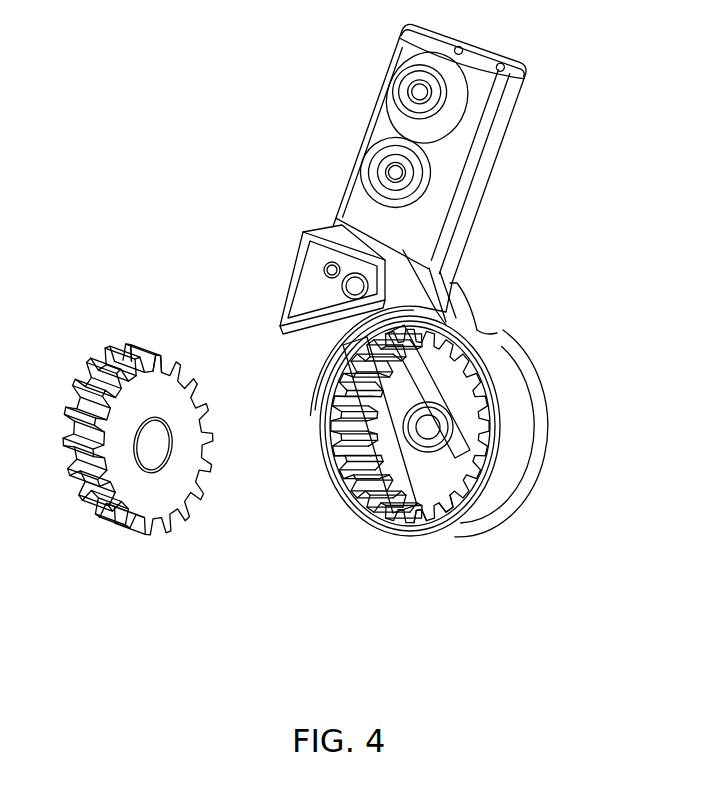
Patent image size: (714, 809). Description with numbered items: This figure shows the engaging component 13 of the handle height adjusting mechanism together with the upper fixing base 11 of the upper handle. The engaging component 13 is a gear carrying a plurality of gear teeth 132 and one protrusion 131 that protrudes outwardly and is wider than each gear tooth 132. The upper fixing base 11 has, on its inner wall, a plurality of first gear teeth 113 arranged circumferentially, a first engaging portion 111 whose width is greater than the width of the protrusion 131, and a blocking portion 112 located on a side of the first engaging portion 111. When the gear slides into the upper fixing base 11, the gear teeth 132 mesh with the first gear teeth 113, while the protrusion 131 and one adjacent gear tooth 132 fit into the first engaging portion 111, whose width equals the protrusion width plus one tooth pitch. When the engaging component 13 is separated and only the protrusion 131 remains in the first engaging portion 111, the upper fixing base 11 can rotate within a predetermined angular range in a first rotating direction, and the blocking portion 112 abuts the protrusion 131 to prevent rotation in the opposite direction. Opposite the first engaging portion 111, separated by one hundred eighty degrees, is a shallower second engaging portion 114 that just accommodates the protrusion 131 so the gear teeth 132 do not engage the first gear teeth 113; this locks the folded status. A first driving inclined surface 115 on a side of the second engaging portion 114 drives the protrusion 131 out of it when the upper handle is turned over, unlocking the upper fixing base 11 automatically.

The upper fixing base 11 is at (490, 502).
The first engaging portion 111 is at (448, 340).
The blocking portion 112 is at (327, 358).
The first gear teeth 113 is at (480, 403).
The second engaging portion 114 is at (445, 520).
The first driving inclined surface 115 is at (422, 517).
The engaging component 13 is at (142, 493).
The protrusion 131 is at (155, 347).
The gear teeth 132 is at (87, 372).